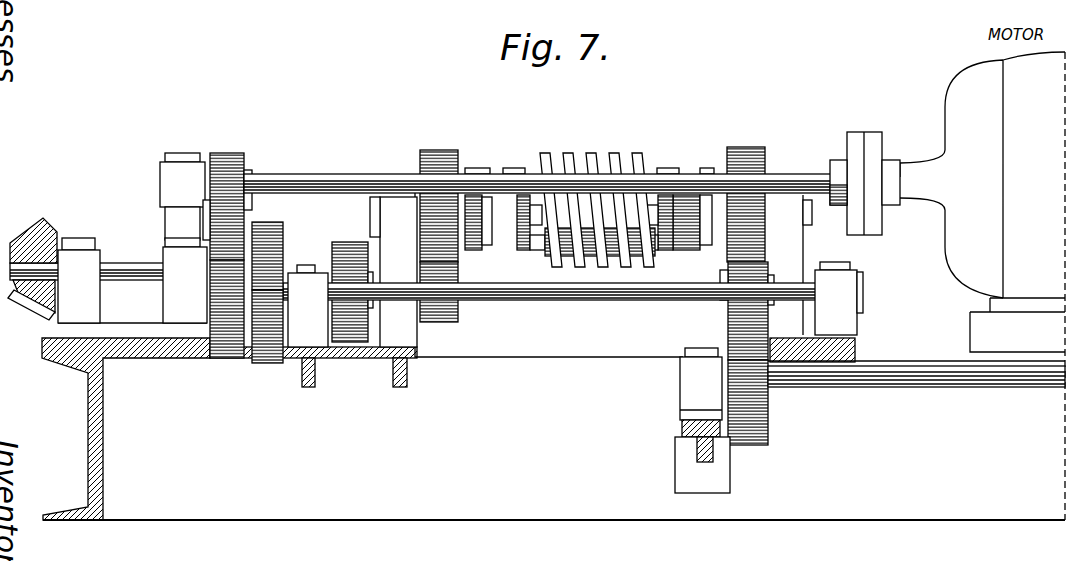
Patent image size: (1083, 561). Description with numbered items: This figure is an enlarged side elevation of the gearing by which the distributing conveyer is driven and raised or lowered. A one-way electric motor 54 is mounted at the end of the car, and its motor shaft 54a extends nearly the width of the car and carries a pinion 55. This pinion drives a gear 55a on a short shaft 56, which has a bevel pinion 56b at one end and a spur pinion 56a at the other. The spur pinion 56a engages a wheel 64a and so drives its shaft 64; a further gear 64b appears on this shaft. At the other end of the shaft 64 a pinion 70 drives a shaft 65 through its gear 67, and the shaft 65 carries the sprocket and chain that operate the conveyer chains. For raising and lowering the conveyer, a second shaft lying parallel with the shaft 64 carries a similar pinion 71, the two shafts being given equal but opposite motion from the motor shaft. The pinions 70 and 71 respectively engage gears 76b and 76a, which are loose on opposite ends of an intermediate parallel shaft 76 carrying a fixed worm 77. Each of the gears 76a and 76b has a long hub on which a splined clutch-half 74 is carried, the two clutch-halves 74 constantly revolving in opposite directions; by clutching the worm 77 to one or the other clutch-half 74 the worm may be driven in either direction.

The one-way electric motor 54 is at (982, 286).
The motor shaft 54a is at (795, 164).
The pinion 55 is at (232, 158).
The gear 55a is at (233, 358).
The short shaft 56 is at (128, 263).
The spur pinion 56a is at (277, 265).
The bevel pinion 56b is at (28, 275).
The shaft 64 is at (562, 293).
The wheel 64a is at (268, 364).
The gear on shaft 64 64b is at (351, 345).
The shaft 65 is at (916, 387).
The gear 67 is at (766, 421).
The pinion 70 is at (735, 292).
The pinion 71 is at (443, 322).
The clutch-halves 74 is at (510, 170).
The intermediate parallel shaft 76 is at (517, 215).
The gear 76a is at (430, 150).
The gear 76b is at (745, 147).
The worm 77 is at (590, 158).